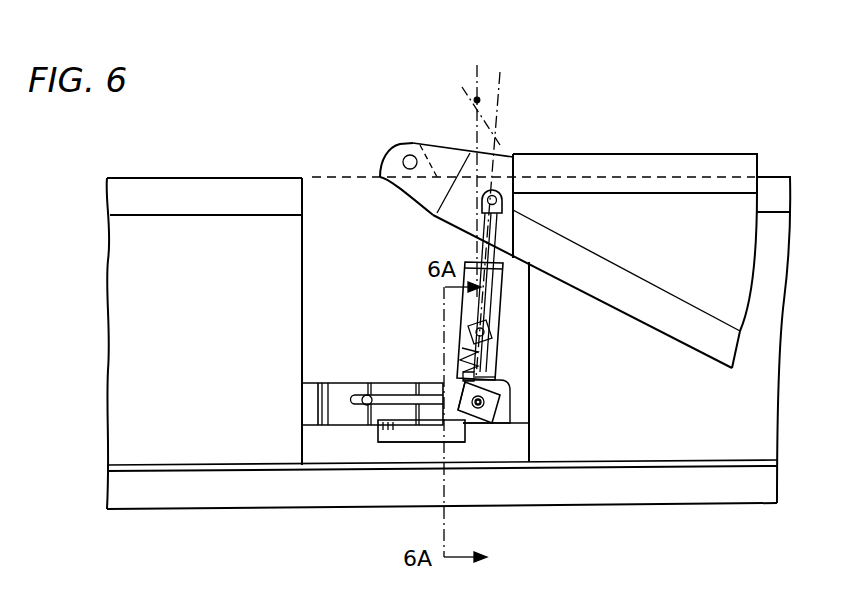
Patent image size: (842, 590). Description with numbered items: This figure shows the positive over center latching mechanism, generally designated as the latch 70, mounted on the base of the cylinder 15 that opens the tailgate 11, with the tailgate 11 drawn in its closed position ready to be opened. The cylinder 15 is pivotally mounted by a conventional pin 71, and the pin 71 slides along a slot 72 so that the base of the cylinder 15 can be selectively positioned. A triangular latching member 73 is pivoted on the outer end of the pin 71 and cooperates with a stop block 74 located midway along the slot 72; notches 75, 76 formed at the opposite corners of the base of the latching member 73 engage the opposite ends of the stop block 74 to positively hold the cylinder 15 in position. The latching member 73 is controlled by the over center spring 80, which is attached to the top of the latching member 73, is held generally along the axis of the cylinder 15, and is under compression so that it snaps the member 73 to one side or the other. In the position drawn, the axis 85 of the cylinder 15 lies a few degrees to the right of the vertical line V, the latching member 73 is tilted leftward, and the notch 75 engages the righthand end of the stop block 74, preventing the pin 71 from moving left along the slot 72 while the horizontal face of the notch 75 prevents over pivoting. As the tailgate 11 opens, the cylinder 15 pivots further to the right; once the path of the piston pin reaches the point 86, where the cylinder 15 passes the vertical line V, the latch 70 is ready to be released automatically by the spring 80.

The tailgate 11 is at (615, 140).
The cylinder 15 is at (497, 290).
The positive action over center latch 70 is at (508, 368).
The pin 71 is at (485, 414).
The slot 72 is at (367, 395).
The latching member 73 is at (463, 402).
The stop block 74 is at (457, 443).
The notch 75 is at (459, 422).
The notch 76 is at (498, 407).
The over center spring 80 is at (482, 357).
The axis 85 is at (502, 100).
The point 86 is at (478, 98).
The vertical line V is at (477, 128).